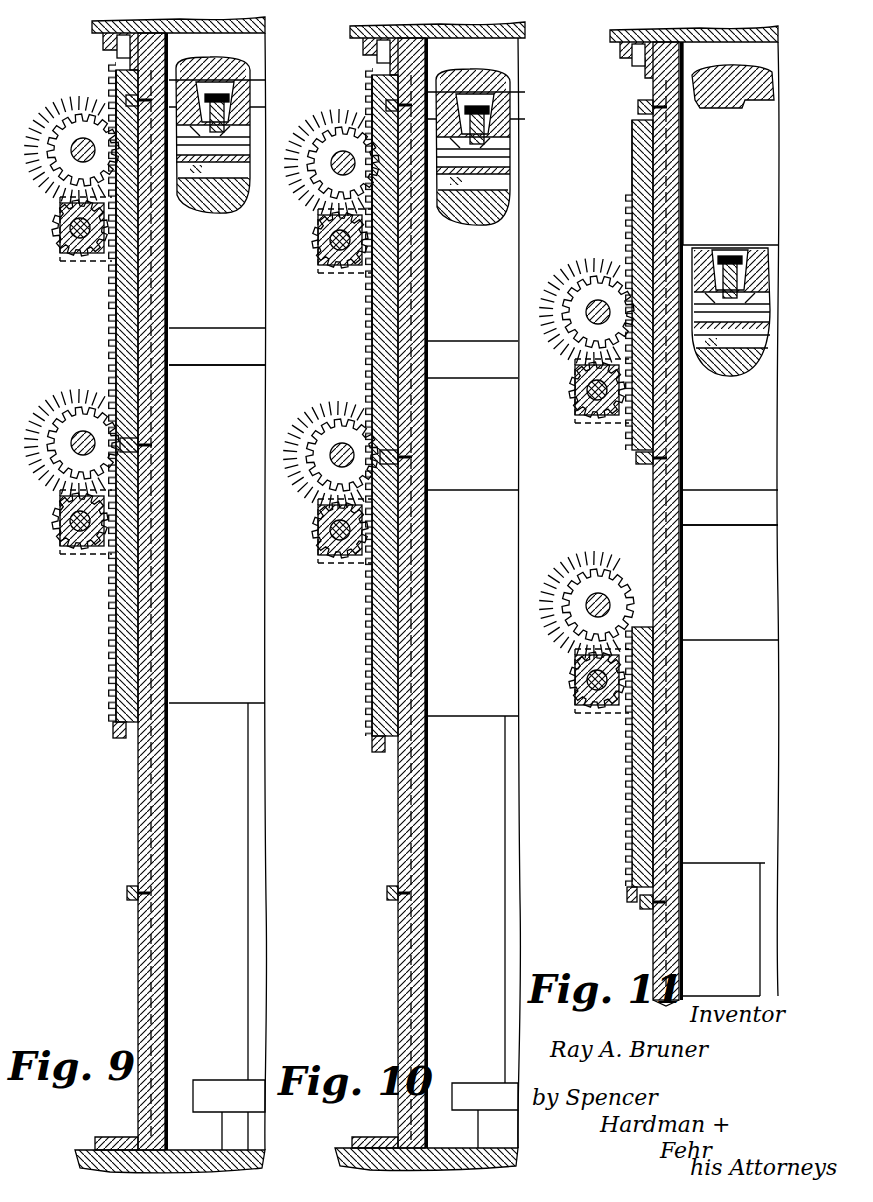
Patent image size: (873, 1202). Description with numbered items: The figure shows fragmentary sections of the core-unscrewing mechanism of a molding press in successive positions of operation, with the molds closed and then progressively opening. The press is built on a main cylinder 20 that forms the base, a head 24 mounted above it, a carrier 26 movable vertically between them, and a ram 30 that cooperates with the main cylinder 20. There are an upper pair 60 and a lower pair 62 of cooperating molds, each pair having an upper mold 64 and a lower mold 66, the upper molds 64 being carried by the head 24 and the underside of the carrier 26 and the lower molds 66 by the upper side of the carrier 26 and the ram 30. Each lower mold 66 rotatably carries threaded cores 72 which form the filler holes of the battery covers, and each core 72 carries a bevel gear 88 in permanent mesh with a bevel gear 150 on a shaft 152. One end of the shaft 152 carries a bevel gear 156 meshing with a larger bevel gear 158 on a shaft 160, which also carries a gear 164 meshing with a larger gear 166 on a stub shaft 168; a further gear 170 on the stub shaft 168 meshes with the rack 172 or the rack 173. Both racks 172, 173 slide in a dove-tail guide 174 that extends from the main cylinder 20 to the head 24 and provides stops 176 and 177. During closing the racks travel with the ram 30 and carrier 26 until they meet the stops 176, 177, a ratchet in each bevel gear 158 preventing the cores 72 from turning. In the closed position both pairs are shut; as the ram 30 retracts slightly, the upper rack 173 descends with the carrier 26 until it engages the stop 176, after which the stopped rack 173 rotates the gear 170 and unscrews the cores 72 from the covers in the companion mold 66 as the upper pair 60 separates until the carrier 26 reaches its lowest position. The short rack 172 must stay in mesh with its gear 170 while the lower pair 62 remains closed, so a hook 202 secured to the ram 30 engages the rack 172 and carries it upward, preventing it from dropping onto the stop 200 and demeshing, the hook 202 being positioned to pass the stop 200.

In FIG. 9, the main cylinder 20 is at (262, 1163).
In FIG. 10, the main cylinder 20 is at (463, 1135).
In FIG. 9, the head 24 is at (91, 28).
In FIG. 10, the head 24 is at (350, 31).
In FIG. 11, the head 24 is at (610, 34).
In FIG. 9, the carrier 26 is at (266, 320).
In FIG. 10, the carrier 26 is at (519, 276).
In FIG. 11, the carrier 26 is at (775, 475).
In FIG. 9, the ram 30 is at (252, 885).
In FIG. 10, the ram 30 is at (506, 857).
In FIG. 11, the ram 30 is at (762, 903).
In FIG. 9, the upper pair of molds 60 is at (266, 78).
In FIG. 10, the upper pair of molds 60 is at (536, 93).
In FIG. 9, the lower pair of molds 62 is at (266, 365).
In FIG. 10, the lower pair of molds 62 is at (519, 378).
In FIG. 11, the lower pair of molds 62 is at (763, 528).
In FIG. 9, the upper mold 64 is at (266, 52).
In FIG. 10, the upper mold 64 is at (528, 62).
In FIG. 11, the upper mold 64 is at (770, 100).
In FIG. 9, the lower mold 66 is at (266, 95).
In FIG. 10, the lower mold 66 is at (512, 112).
In FIG. 11, the lower mold 66 is at (696, 250).
In FIG. 9, the threaded core 72 is at (266, 108).
In FIG. 10, the threaded core 72 is at (486, 120).
In FIG. 11, the threaded core 72 is at (742, 258).
In FIG. 9, the bevel gear 88 is at (224, 205).
In FIG. 10, the bevel gear 88 is at (512, 150).
In FIG. 11, the bevel gear 88 is at (752, 365).
In FIG. 9, the bevel gear 150 is at (183, 200).
In FIG. 10, the bevel gear 150 is at (441, 205).
In FIG. 11, the bevel gear 150 is at (698, 365).
In FIG. 9, the shaft 152 is at (216, 212).
In FIG. 10, the shaft 152 is at (472, 210).
In FIG. 11, the shaft 152 is at (732, 336).
In FIG. 11, the bevel gear 156 is at (670, 248).
In FIG. 9, the bevel gear 158 is at (80, 112).
In FIG. 10, the bevel gear 158 is at (350, 112).
In FIG. 11, the bevel gear 158 is at (610, 272).
In FIG. 9, the shaft 160 is at (56, 110).
In FIG. 10, the shaft 160 is at (310, 178).
In FIG. 11, the shaft 160 is at (573, 268).
In FIG. 9, the gear 164 is at (74, 152).
In FIG. 10, the gear 164 is at (340, 150).
In FIG. 11, the gear 164 is at (585, 300).
In FIG. 9, the gear 166 is at (58, 262).
In FIG. 10, the gear 166 is at (306, 240).
In FIG. 11, the gear 166 is at (562, 420).
In FIG. 9, the stub shaft 168 is at (62, 232).
In FIG. 10, the stub shaft 168 is at (322, 250).
In FIG. 11, the stub shaft 168 is at (582, 425).
In FIG. 9, the gear 170 is at (72, 262).
In FIG. 10, the gear 170 is at (335, 268).
In FIG. 11, the gear 170 is at (594, 430).
In FIG. 9, the rack 172 is at (114, 610).
In FIG. 10, the rack 172 is at (366, 610).
In FIG. 11, the rack 172 is at (625, 780).
In FIG. 9, the rack 173 is at (114, 312).
In FIG. 10, the rack 173 is at (366, 315).
In FIG. 11, the rack 173 is at (627, 192).
In FIG. 9, the dove-tail guide 174 is at (138, 778).
In FIG. 10, the dove-tail guide 174 is at (397, 795).
In FIG. 11, the dove-tail guide 174 is at (654, 497).
In FIG. 9, the stop 176 is at (152, 443).
In FIG. 10, the stop 176 is at (408, 455).
In FIG. 11, the stop 176 is at (648, 464).
In FIG. 9, the stop 177 is at (131, 95).
In FIG. 10, the stop 177 is at (391, 100).
In FIG. 11, the stop 177 is at (644, 102).
In FIG. 9, the stop 200 is at (128, 900).
In FIG. 10, the stop 200 is at (388, 900).
In FIG. 11, the stop 200 is at (642, 908).
In FIG. 9, the hook 202 is at (114, 738).
In FIG. 10, the hook 202 is at (376, 752).
In FIG. 11, the hook 202 is at (627, 895).